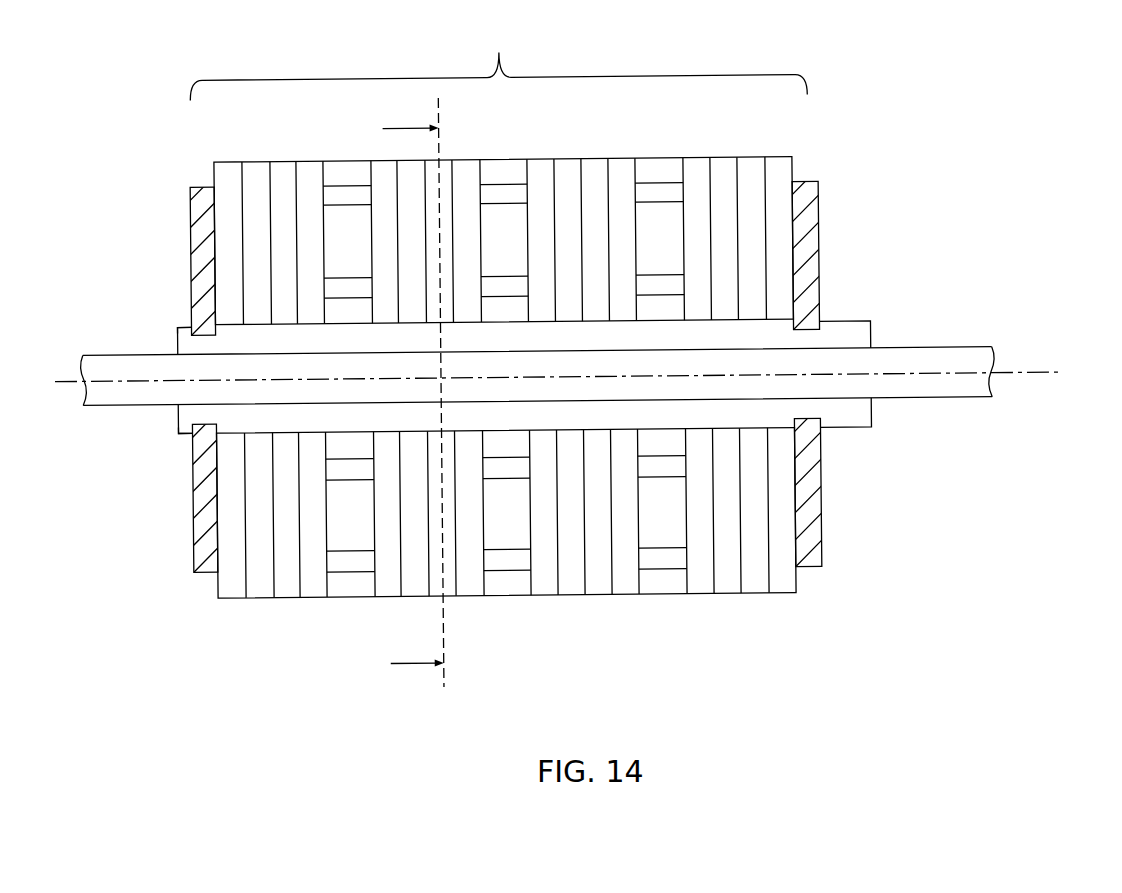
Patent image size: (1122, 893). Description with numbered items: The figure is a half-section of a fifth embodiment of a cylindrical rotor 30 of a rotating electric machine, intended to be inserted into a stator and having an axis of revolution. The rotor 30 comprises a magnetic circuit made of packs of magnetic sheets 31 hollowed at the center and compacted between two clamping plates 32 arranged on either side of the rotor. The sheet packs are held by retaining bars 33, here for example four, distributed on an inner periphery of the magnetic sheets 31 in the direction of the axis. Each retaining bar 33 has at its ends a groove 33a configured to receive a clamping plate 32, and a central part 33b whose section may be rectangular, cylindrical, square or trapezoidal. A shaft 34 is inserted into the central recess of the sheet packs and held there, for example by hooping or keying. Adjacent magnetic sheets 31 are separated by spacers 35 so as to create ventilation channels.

The rotor 30 is at (946, 66).
The magnetic sheets 31 is at (328, 598).
The clamping plates 32 is at (198, 220).
The retaining bars 33 is at (855, 325).
The groove 33a is at (181, 328).
The central part 33b is at (537, 421).
The shaft 34 is at (940, 352).
The spacers 35 is at (508, 572).